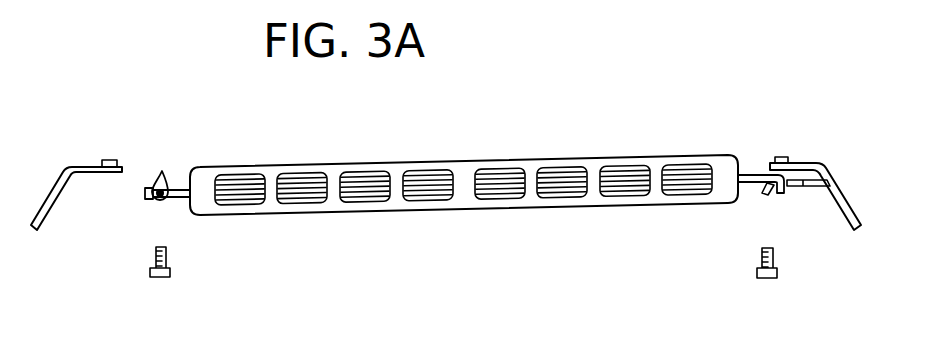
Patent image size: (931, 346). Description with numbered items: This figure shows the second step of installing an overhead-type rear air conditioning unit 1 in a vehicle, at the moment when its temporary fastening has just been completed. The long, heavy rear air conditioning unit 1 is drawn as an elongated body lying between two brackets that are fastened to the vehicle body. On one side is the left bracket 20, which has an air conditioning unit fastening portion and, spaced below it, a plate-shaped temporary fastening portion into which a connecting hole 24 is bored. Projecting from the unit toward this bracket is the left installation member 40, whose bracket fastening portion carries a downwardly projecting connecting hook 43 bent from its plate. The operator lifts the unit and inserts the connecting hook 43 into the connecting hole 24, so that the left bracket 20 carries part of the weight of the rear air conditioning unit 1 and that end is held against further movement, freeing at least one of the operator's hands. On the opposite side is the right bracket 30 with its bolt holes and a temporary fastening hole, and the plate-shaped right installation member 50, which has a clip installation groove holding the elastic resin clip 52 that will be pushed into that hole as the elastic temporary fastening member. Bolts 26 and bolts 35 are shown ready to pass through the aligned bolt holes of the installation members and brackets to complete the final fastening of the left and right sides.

The rear air conditioning unit 1 is at (473, 162).
The left bracket 20 is at (841, 190).
The connecting hole 24 is at (797, 187).
The bolts 26 is at (758, 272).
The right bracket 30 is at (50, 187).
The bolts 35 is at (170, 272).
The left installation member 40 is at (753, 174).
The connecting hook 43 is at (783, 194).
The right installation member 50 is at (182, 198).
The resin clip 52 is at (162, 170).